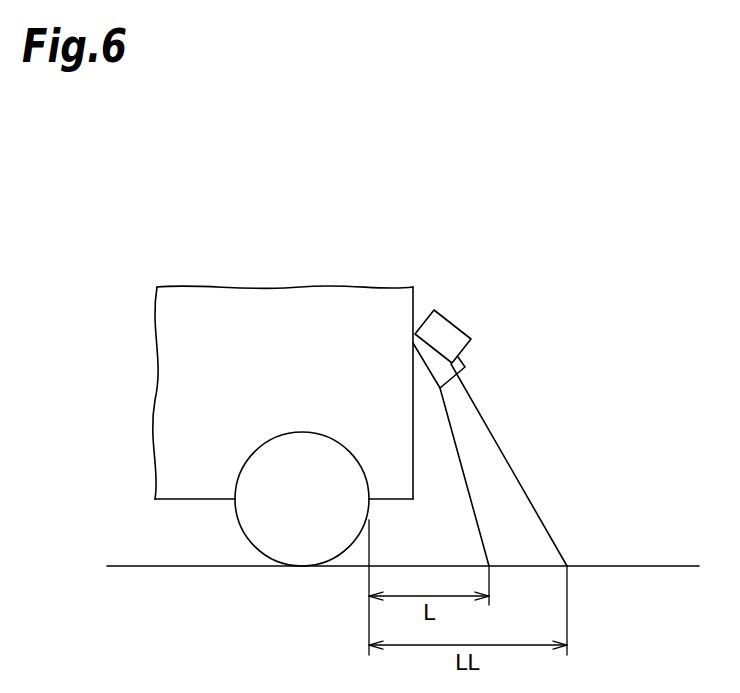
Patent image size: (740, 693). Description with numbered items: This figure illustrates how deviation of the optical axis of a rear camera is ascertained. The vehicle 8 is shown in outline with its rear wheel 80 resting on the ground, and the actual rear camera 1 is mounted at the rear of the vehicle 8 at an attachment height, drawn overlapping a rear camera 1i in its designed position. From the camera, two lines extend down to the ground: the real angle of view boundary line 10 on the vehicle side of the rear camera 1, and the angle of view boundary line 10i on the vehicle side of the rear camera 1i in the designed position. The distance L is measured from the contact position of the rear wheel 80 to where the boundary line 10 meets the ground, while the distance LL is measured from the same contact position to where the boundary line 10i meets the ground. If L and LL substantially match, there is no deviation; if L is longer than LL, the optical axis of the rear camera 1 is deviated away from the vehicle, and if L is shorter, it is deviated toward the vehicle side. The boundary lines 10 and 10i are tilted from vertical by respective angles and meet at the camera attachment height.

The vehicle 8 is at (298, 296).
The rear wheel 80 is at (303, 553).
The rear camera 1 is at (465, 357).
The rear camera in a designed position 1i is at (445, 330).
The real angle of view boundary line 10 is at (478, 520).
The angle of view boundary line 10i is at (508, 462).